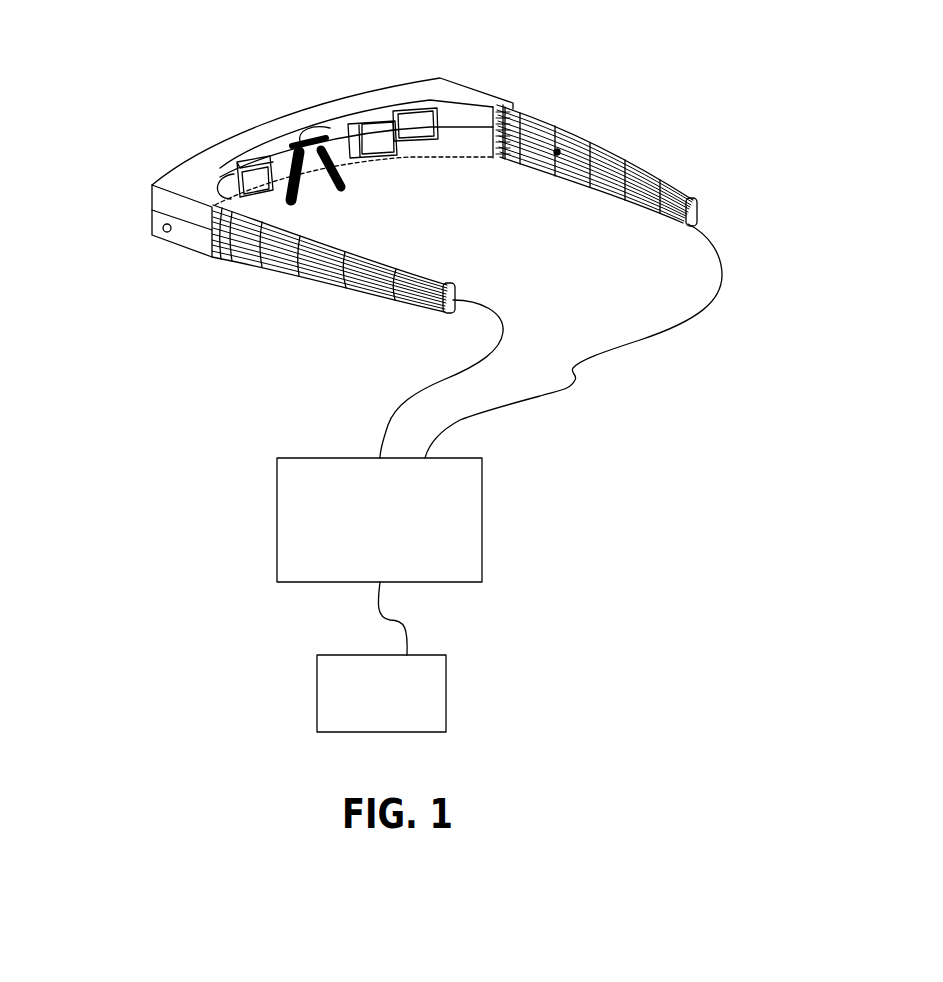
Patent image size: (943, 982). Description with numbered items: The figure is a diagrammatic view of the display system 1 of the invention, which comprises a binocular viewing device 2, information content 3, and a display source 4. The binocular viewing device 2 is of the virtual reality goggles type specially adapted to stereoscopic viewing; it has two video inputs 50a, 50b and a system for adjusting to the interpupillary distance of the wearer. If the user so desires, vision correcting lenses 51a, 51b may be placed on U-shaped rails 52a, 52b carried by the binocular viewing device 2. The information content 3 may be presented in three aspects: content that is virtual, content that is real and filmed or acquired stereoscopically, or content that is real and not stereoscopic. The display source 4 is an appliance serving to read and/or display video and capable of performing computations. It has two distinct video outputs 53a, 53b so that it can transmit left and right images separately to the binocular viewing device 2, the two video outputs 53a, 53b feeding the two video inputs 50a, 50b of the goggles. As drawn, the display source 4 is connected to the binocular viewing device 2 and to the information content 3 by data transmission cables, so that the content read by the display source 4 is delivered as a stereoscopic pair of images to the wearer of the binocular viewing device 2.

The display system 1 is at (588, 575).
The binocular viewing device 2 is at (200, 254).
The information content 3 is at (381, 657).
The display source 4 is at (379, 520).
The video input 50a is at (430, 312).
The video input 50b is at (697, 222).
The vision correcting lens 51a is at (241, 175).
The vision correcting lens 51b is at (380, 132).
The U-shaped rail 52a is at (229, 173).
The U-shaped rail 52b is at (395, 135).
The video output 53a is at (380, 455).
The video output 53b is at (427, 455).